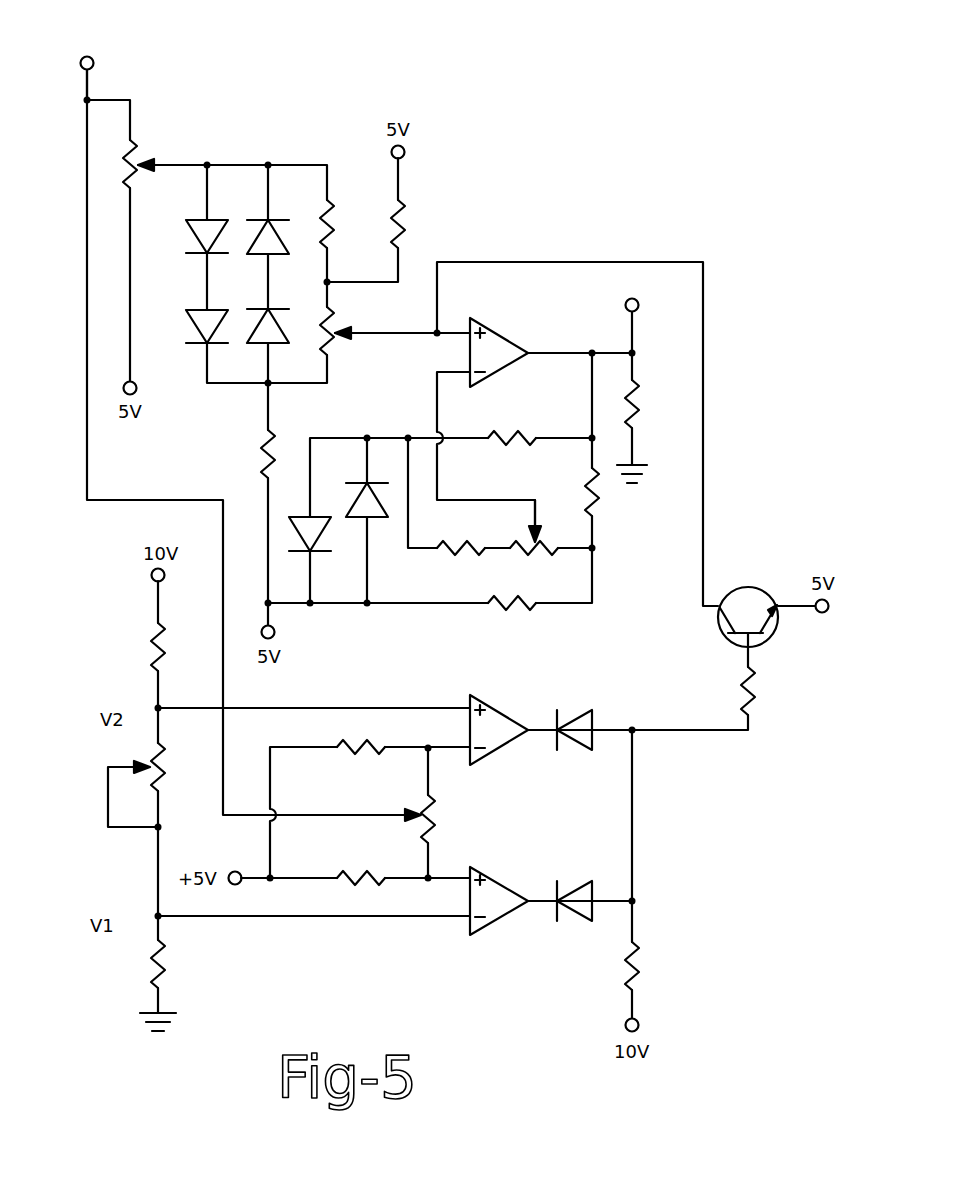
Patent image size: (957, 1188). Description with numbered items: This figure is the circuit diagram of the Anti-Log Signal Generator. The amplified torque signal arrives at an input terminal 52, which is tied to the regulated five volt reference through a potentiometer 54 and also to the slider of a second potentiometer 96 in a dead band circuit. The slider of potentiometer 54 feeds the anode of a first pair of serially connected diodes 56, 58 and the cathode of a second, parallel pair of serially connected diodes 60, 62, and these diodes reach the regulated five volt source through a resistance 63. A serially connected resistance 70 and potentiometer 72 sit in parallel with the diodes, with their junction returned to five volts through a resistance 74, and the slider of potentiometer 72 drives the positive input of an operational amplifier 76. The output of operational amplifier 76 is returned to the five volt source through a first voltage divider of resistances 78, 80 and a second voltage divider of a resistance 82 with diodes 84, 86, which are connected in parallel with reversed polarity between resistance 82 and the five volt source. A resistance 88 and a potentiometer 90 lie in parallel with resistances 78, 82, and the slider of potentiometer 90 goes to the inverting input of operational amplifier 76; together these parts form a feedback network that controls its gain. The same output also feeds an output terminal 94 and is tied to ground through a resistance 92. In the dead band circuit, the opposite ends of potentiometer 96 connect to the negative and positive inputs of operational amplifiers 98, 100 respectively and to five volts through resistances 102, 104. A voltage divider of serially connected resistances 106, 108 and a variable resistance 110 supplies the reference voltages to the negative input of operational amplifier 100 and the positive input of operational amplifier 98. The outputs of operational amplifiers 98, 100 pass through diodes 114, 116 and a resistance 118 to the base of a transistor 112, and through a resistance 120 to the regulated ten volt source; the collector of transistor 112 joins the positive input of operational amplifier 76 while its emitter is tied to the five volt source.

The input terminal 52 is at (91, 55).
The potentiometer 54 is at (135, 150).
The diode 56 is at (190, 228).
The diode 58 is at (192, 320).
The diode 60 is at (258, 236).
The diode 62 is at (257, 330).
The resistance 63 is at (256, 455).
The resistance 70 is at (333, 230).
The potentiometer 72 is at (341, 352).
The resistance 74 is at (405, 230).
The operational amplifier 76 is at (500, 332).
The resistance 78 is at (600, 497).
The resistance 80 is at (513, 615).
The resistance 82 is at (508, 434).
The diode 84 is at (302, 505).
The diode 86 is at (380, 505).
The resistance 88 is at (472, 545).
The potentiometer 90 is at (541, 530).
The resistance 92 is at (641, 411).
The output terminal 94 is at (629, 299).
The second potentiometer 96 is at (437, 821).
The operational amplifier 98 is at (500, 710).
The operational amplifier 100 is at (505, 880).
The resistance 102 is at (363, 756).
The resistance 104 is at (361, 872).
The resistance 106 is at (150, 650).
The resistance 108 is at (165, 965).
The variable resistance 110 is at (165, 770).
The transistor 112 is at (750, 587).
The diode 114 is at (578, 715).
The diode 116 is at (581, 918).
The resistance 118 is at (758, 690).
The resistance 120 is at (642, 965).